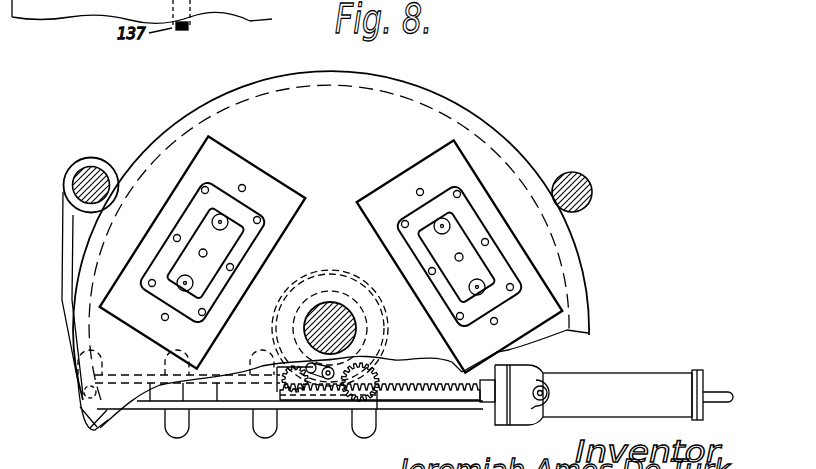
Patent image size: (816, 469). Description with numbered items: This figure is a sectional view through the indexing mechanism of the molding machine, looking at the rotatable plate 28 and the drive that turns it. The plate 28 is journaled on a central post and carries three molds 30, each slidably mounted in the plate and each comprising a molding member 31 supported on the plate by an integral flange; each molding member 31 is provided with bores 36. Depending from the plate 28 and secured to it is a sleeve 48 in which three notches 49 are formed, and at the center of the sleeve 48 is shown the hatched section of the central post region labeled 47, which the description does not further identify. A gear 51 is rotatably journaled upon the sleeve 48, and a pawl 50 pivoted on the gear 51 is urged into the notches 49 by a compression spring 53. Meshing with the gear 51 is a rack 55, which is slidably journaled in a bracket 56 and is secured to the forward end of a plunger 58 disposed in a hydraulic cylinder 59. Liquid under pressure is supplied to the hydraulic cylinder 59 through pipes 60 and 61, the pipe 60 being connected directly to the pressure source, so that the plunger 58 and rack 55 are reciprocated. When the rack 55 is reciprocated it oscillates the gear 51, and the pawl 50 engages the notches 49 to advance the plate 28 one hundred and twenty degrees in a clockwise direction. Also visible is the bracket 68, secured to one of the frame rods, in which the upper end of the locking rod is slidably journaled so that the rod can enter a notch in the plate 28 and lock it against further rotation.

The plate 28 is at (437, 120).
The bracket 68 is at (66, 183).
The molding member 31 is at (242, 170).
The bore 36 is at (245, 186).
The mold 30 is at (380, 190).
The sleeve 48 is at (327, 297).
The notch 49 is at (317, 302).
The shaft 47 is at (338, 318).
The gear 51 is at (362, 367).
The compression spring 53 is at (312, 372).
The pawl 50 is at (320, 379).
The rack 55 is at (450, 395).
The bracket 56 is at (186, 426).
The plunger 58 is at (487, 404).
The hydraulic cylinder 59 is at (637, 380).
The pipe 60 is at (545, 387).
The pipe 61 is at (717, 390).